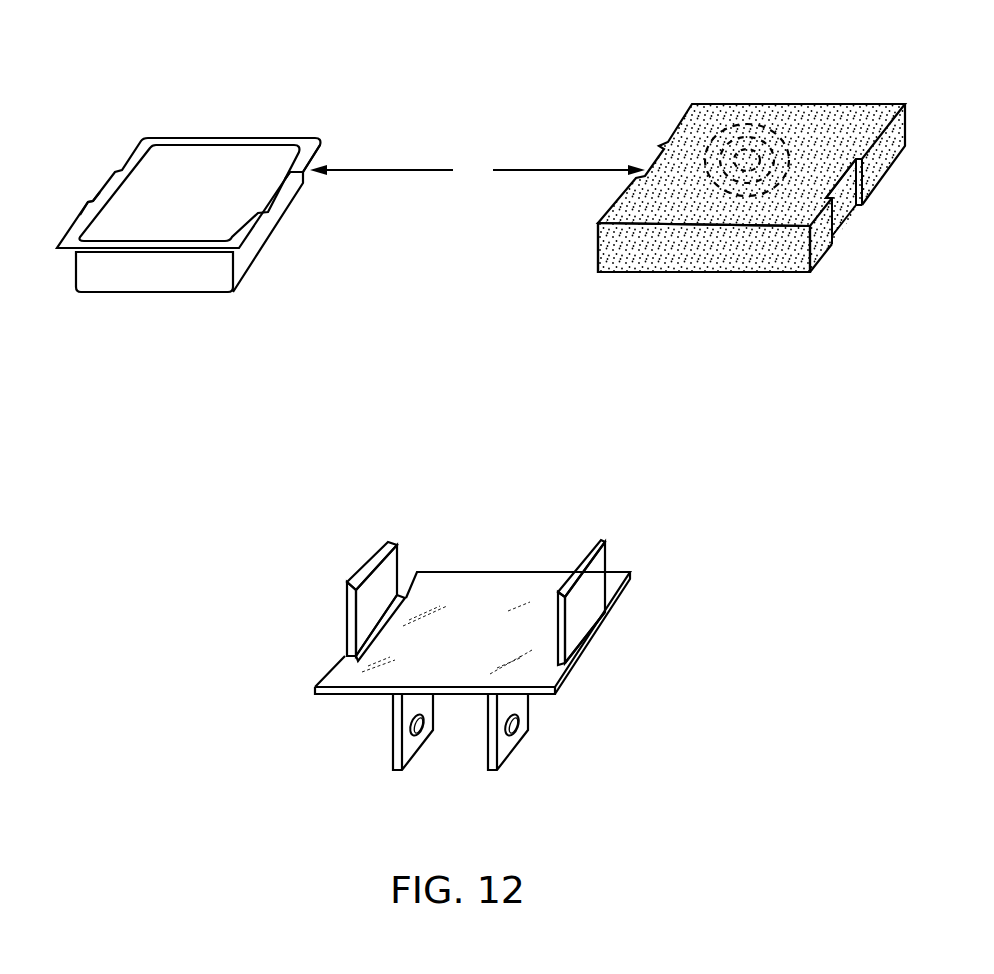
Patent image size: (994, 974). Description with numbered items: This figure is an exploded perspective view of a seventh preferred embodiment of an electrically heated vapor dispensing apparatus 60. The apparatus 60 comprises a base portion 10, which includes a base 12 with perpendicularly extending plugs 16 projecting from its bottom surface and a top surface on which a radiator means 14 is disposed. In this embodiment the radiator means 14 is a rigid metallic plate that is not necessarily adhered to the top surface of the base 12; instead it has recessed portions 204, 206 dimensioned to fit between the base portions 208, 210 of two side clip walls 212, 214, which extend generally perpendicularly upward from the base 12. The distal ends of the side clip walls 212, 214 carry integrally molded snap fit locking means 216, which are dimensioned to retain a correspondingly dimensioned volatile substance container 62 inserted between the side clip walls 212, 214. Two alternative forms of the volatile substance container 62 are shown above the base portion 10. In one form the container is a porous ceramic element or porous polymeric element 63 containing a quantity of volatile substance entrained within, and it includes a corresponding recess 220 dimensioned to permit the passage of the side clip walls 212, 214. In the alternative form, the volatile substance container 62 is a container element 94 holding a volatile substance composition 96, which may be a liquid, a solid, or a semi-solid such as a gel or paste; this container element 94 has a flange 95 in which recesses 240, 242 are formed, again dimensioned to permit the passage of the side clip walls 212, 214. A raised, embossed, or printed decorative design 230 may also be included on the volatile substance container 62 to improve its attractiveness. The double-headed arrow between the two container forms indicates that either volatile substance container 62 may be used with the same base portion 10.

The base portion 10 is at (634, 742).
The base 12 is at (633, 581).
The radiator means 14 is at (488, 584).
The plugs 16 is at (412, 763).
The apparatus 60 is at (505, 54).
The volatile substance container 62 is at (477, 170).
The porous ceramic element or porous polymeric element 63 is at (635, 265).
The container element 94 is at (162, 277).
The flange 95 is at (85, 217).
The volatile substance composition 96 is at (153, 160).
The recessed portion 204 is at (570, 662).
The recessed portion 206 is at (343, 655).
The base portion of side clip wall 208 is at (587, 607).
The base portion of side clip wall 210 is at (347, 645).
The side clip wall 212 is at (597, 568).
The side clip wall 214 is at (347, 617).
The snap fit locking means 216 is at (603, 538).
The recess 220 is at (641, 149).
The decorative design 230 is at (768, 122).
The recess 240 is at (287, 189).
The recess 242 is at (86, 193).